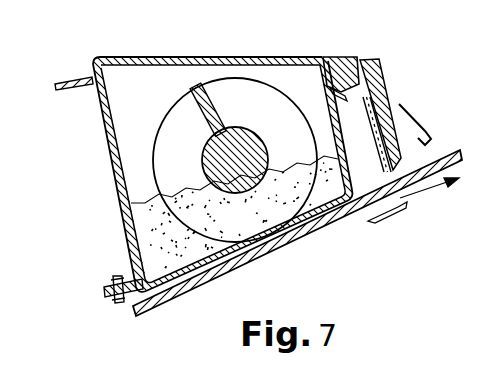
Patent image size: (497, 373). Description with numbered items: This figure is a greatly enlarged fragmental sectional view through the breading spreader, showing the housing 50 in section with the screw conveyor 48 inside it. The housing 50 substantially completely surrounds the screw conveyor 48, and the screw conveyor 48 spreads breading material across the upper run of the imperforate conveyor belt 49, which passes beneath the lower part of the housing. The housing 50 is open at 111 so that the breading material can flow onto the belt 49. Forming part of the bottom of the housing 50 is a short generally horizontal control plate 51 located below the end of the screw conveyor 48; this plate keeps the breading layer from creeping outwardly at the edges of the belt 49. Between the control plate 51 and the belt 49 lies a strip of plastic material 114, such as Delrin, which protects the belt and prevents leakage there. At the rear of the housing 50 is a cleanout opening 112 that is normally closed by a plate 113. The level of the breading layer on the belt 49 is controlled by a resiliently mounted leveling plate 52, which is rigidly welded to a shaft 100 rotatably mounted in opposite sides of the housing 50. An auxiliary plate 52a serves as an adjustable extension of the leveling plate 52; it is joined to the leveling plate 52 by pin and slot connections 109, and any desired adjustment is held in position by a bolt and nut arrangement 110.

The housing 50 is at (100, 55).
The screw conveyor 48 is at (178, 118).
The opening 111 is at (328, 113).
The pin and slot connections 109 is at (378, 127).
The shaft 100 is at (345, 60).
The leveling plate 52 is at (377, 85).
The bolt and nut arrangement 110 is at (398, 108).
The auxiliary plate 52a is at (402, 135).
The plate 113 is at (97, 108).
The cleanout opening 112 is at (118, 178).
The control plate 51 is at (212, 259).
The strip of plastic material 114 is at (142, 303).
The conveyor belt 49 is at (305, 233).